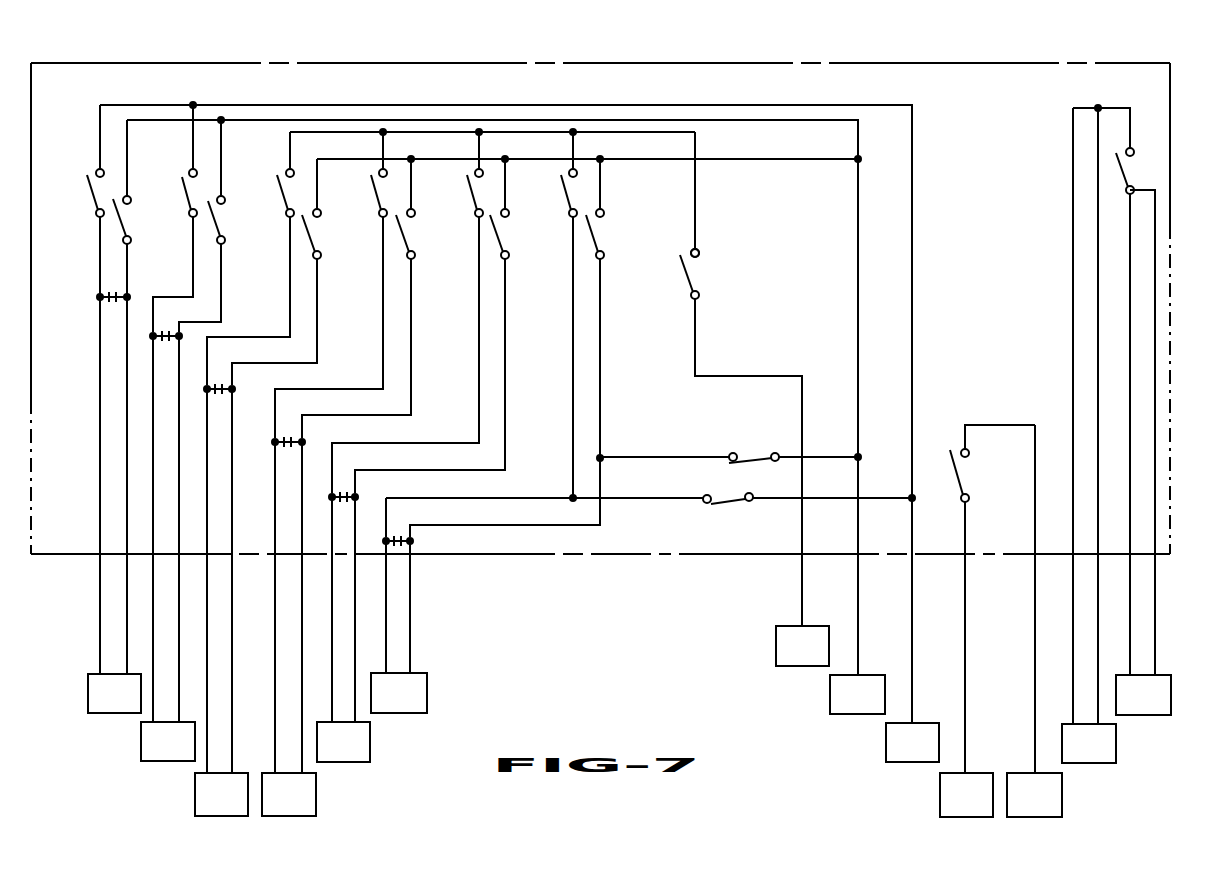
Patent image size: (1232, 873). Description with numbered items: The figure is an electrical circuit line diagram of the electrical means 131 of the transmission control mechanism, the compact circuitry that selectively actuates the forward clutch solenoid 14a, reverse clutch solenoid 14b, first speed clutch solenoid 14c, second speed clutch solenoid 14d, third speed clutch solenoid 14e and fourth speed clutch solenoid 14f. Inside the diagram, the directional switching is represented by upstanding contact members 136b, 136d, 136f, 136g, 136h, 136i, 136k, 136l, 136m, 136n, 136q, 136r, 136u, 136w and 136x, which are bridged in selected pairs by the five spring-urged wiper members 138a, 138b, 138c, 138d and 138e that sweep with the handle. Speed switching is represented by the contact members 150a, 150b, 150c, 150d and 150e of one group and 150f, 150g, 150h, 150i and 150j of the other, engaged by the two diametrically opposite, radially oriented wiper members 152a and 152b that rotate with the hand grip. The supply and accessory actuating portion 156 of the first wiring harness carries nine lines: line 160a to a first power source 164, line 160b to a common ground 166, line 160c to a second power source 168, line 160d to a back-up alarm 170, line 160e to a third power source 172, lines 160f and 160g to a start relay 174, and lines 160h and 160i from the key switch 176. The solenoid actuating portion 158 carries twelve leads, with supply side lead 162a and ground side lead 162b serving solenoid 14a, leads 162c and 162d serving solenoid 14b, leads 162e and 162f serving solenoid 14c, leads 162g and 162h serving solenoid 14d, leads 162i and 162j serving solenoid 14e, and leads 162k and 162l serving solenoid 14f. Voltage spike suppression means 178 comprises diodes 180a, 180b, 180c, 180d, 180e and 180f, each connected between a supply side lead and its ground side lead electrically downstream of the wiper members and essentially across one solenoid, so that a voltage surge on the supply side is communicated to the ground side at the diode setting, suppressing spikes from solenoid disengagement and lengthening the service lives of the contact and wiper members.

The electrical means 131 is at (667, 558).
The forward clutch solenoid 14a is at (130, 704).
The reverse clutch solenoid 14b is at (184, 752).
The first speed clutch solenoid 14c is at (237, 805).
The second speed clutch solenoid 14d is at (305, 805).
The third speed clutch solenoid 14e is at (359, 752).
The fourth speed clutch solenoid 14f is at (412, 703).
The contact member 136n is at (97, 170).
The contact member 136i is at (129, 197).
The contact member 136k is at (99, 217).
The contact member 136m is at (196, 216).
The contact member 136f is at (129, 243).
The contact member 136h is at (223, 243).
The contact member 136u is at (699, 252).
The contact member 136w is at (695, 253).
The contact member 136x is at (699, 297).
The contact member 136g is at (729, 456).
The contact member 136l is at (704, 496).
The contact member 136b is at (1133, 150).
The contact member 136d is at (1127, 193).
The contact member 136r is at (962, 450).
The contact member 136q is at (968, 499).
The wiper member 138c is at (90, 192).
The wiper member 138b is at (123, 220).
The wiper member 138e is at (689, 270).
The wiper member 138a is at (1117, 168).
The wiper member 138d is at (958, 466).
The wiper member 152a is at (275, 177).
The wiper member 152b is at (310, 235).
The contact member 150a is at (569, 213).
The contact member 150b is at (475, 213).
The contact member 150c is at (379, 213).
The contact member 150d is at (286, 214).
The contact member 150e is at (697, 144).
The contact member 150f is at (603, 257).
The contact member 150g is at (508, 257).
The contact member 150h is at (414, 257).
The contact member 150i is at (320, 257).
The contact member 150j is at (737, 162).
The line 160a is at (800, 563).
The line 160b is at (393, 119).
The line 160c is at (250, 104).
The line 160d is at (967, 627).
The line 160e is at (1033, 760).
The line 160f is at (1072, 637).
The line 160g is at (1097, 657).
The line 160h is at (1131, 598).
The line 160i is at (1156, 578).
The supply side lead 162a is at (99, 572).
The ground side lead 162b is at (126, 590).
The supply side lead 162c is at (152, 619).
The ground side lead 162d is at (178, 645).
The supply side lead 162e is at (206, 766).
The ground side lead 162f is at (230, 768).
The supply side lead 162g is at (277, 765).
The ground side lead 162h is at (304, 763).
The supply side lead 162i is at (333, 663).
The ground side lead 162j is at (357, 645).
The supply side lead 162k is at (388, 606).
The ground side lead 162l is at (412, 573).
The voltage spike suppression means 178 is at (96, 290).
The diode 180a is at (112, 300).
The diode 180b is at (163, 339).
The diode 180c is at (220, 386).
The diode 180d is at (290, 439).
The diode 180e is at (344, 494).
The diode 180f is at (398, 538).
The supply and accessory actuating portion 156 is at (798, 608).
The solenoid actuating portion 158 is at (424, 617).
The first power source 164 is at (820, 657).
The common ground 166 is at (875, 705).
The second power source 168 is at (930, 753).
The back-up alarm 170 is at (984, 806).
The third power source 172 is at (1052, 806).
The start relay 174 is at (1107, 754).
The key switch 176 is at (1161, 706).